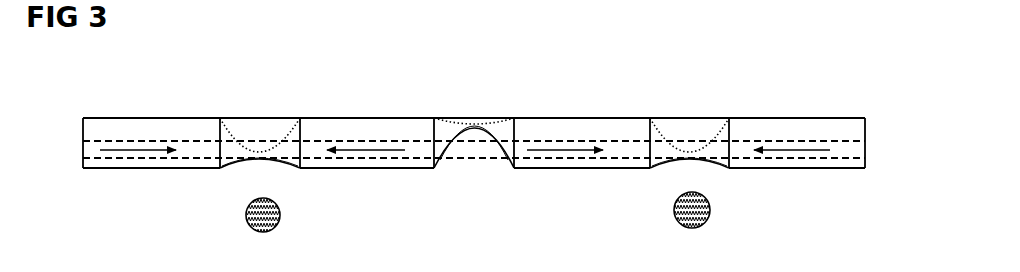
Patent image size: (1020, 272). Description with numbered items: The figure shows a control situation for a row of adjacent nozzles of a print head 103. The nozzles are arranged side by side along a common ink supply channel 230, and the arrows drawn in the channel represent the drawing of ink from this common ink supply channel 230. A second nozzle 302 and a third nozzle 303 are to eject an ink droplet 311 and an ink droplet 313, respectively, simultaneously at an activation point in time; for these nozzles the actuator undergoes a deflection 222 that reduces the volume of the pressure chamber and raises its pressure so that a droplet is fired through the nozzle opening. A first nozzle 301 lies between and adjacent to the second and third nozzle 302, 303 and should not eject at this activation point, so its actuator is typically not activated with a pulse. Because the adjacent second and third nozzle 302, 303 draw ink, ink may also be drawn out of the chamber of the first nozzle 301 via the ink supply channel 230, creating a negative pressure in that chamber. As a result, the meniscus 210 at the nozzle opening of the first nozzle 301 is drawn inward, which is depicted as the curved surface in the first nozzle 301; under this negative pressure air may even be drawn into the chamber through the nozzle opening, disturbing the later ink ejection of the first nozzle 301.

The print head 103 is at (802, 185).
The ink supply channel 230 is at (142, 138).
The second nozzle 302 is at (268, 97).
The first nozzle 301 is at (471, 108).
The third nozzle 303 is at (688, 108).
The deflection 222 is at (237, 140).
The meniscus 210 is at (490, 142).
The ink droplet 311 is at (282, 220).
The ink droplet 313 is at (712, 214).